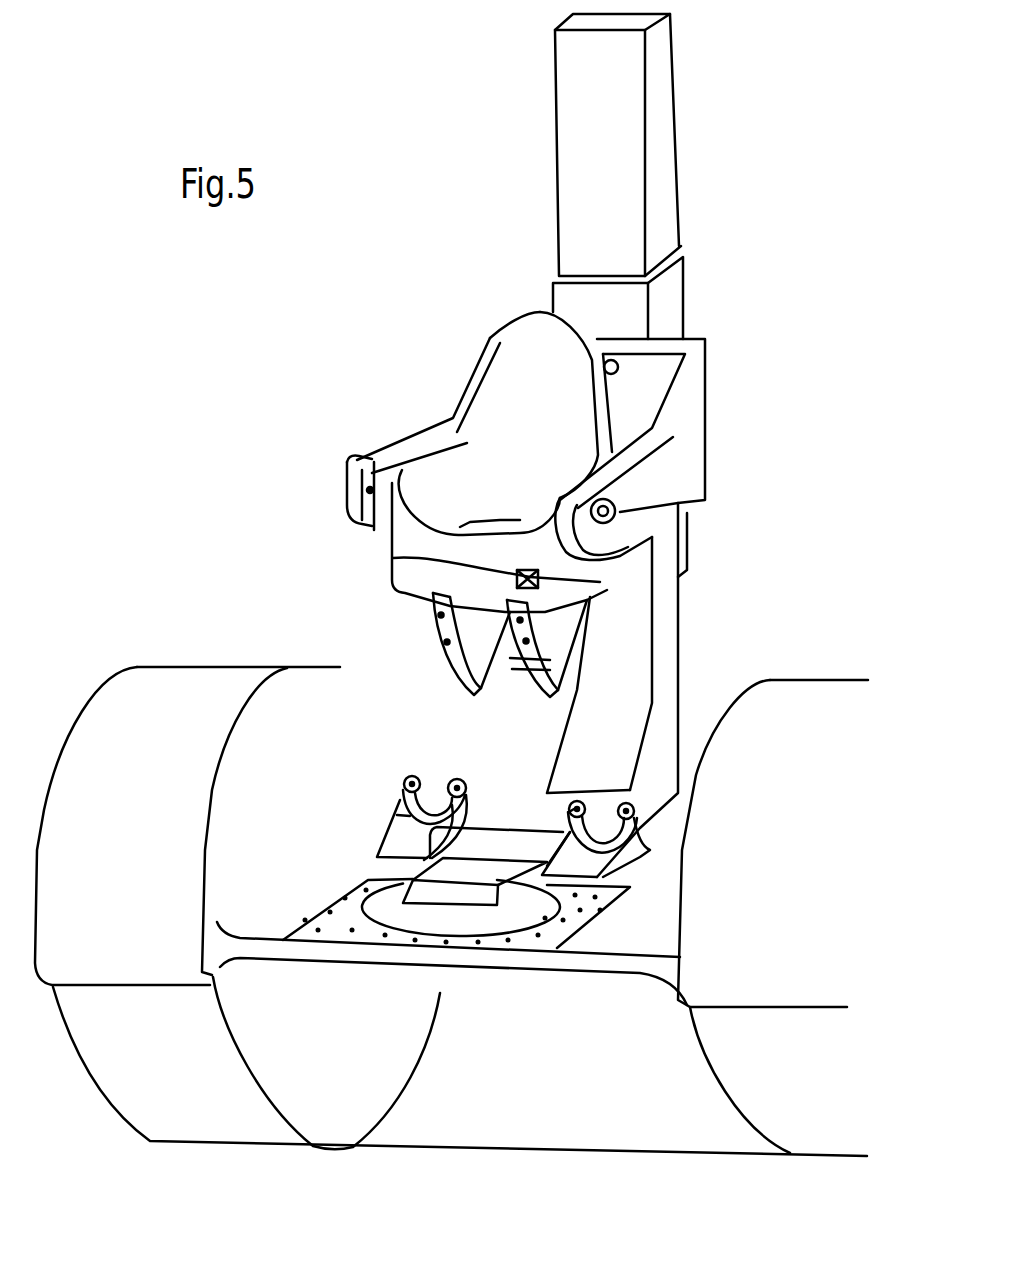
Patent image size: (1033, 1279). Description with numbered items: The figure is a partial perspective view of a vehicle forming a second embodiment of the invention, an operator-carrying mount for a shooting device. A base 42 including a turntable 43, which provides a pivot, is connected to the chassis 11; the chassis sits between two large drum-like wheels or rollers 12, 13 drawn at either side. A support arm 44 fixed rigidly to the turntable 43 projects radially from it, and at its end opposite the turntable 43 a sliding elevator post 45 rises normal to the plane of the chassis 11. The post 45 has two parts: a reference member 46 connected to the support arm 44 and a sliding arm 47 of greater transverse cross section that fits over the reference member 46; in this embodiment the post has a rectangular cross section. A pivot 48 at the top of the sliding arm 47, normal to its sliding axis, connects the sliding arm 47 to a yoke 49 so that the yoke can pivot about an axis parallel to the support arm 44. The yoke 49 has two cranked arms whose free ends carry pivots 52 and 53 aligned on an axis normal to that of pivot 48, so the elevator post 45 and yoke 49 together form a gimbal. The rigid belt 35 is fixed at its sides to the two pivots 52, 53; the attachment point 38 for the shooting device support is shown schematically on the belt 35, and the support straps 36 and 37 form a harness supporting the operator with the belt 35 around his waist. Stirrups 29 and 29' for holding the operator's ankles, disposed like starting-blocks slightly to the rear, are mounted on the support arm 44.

The sliding elevator post 45 is at (586, 141).
The pivot 48 is at (617, 363).
The pivot 53 is at (372, 440).
The rigid belt 35 is at (522, 402).
The yoke 49 is at (667, 455).
The pivot 52 is at (630, 513).
The sliding arm 47 is at (675, 548).
The attachment point 38 is at (515, 578).
The support strap 37 is at (442, 633).
The reference member 46 is at (667, 632).
The support strap 36 is at (515, 692).
The support arm 44 is at (527, 823).
The stirrup 29 is at (463, 826).
The stirrup 29' is at (534, 781).
The turntable 43 is at (510, 915).
The base 42 is at (555, 925).
The chassis 11 is at (638, 965).
The roller 12 is at (155, 1046).
The roller 13 is at (800, 1065).